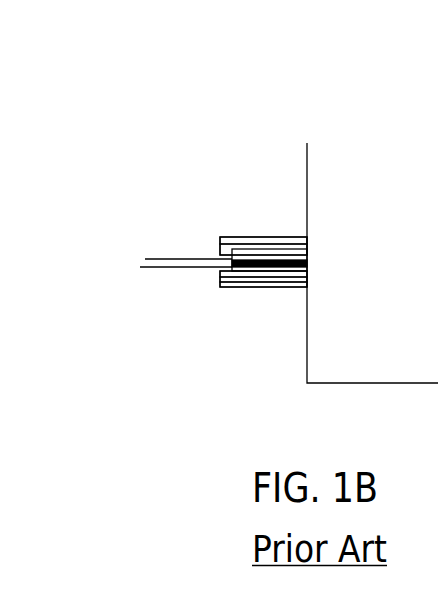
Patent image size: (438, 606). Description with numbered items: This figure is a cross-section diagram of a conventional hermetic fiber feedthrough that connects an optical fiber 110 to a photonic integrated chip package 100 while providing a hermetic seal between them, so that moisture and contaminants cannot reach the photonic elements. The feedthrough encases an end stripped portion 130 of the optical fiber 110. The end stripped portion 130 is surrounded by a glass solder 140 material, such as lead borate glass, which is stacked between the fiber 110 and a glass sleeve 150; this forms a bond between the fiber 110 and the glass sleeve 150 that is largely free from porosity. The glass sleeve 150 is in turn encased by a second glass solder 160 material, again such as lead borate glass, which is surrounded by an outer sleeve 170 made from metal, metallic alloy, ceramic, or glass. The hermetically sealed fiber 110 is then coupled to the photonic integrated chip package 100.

The photonic integrated chip package 100 is at (397, 133).
The optical fiber 110 is at (143, 245).
The end stripped portion 130 is at (319, 263).
The glass solder 140 is at (229, 249).
The glass sleeve 150 is at (253, 235).
The glass solder 160 is at (279, 228).
The outer sleeve 170 is at (306, 226).